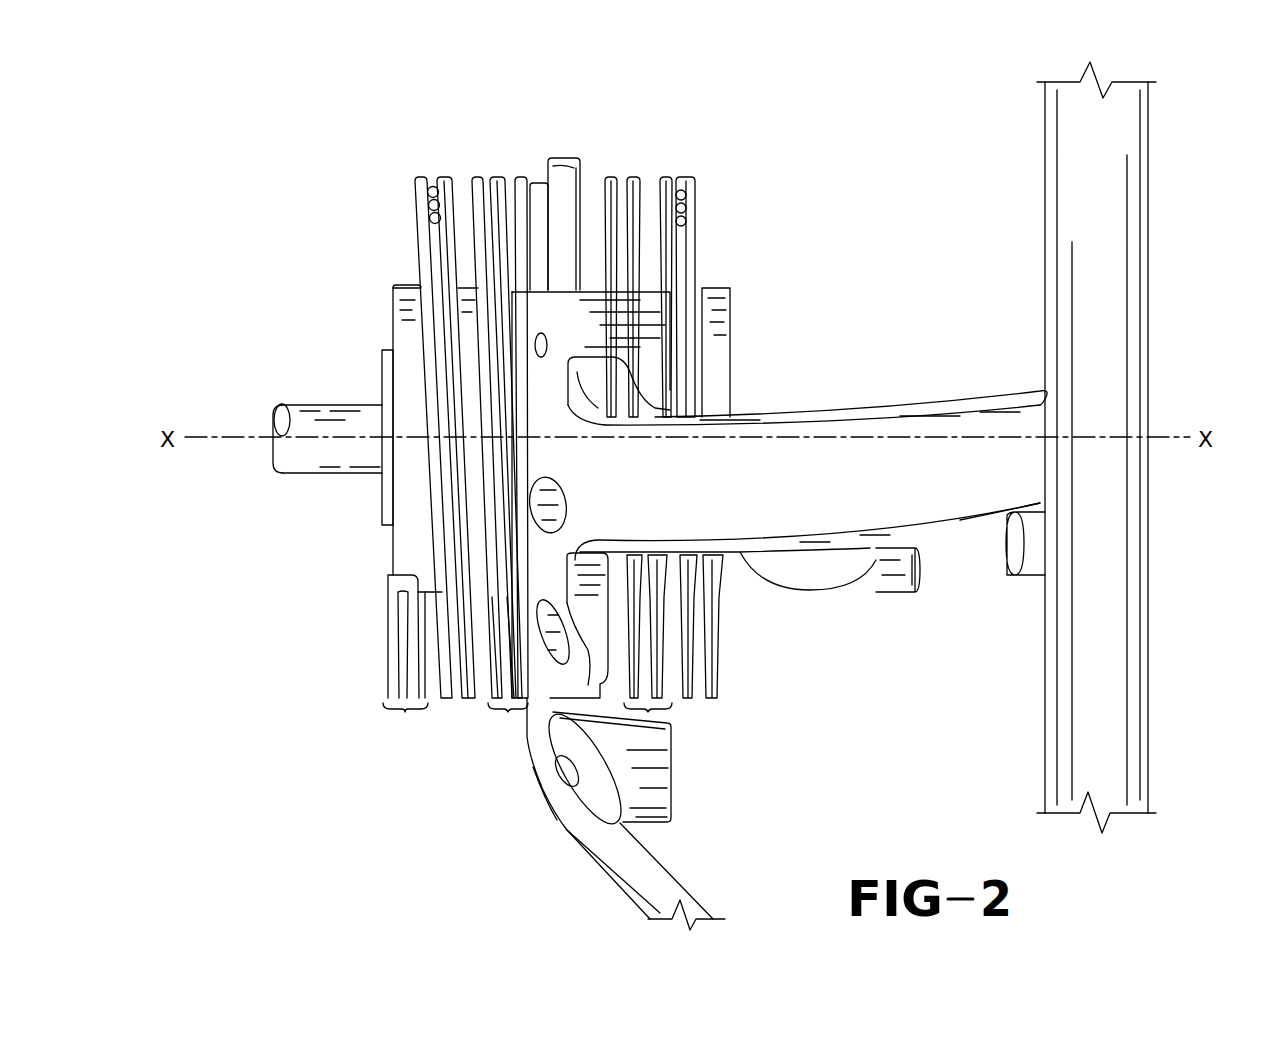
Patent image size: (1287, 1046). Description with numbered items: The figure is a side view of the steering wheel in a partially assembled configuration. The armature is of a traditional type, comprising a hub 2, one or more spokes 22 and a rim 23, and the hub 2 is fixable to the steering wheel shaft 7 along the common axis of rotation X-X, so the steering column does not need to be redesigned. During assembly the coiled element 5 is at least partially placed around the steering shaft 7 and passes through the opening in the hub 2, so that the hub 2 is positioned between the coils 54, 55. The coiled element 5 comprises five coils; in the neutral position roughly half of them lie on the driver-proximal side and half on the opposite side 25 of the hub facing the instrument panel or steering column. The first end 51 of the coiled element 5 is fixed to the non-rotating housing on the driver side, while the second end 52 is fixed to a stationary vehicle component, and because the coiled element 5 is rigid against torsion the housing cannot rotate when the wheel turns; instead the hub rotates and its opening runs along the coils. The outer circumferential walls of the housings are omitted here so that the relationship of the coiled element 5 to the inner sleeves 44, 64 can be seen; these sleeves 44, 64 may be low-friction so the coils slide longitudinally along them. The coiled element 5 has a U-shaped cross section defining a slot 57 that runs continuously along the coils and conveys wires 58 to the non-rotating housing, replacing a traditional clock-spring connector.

The hub 2 is at (565, 200).
The coiled element 5 is at (404, 203).
The steering wheel shaft 7 is at (340, 478).
The spoke 22 is at (968, 425).
The rim 23 is at (1095, 218).
The opposite side of the hub 25 is at (525, 728).
The inner sleeve 44 is at (718, 350).
The first end of the coiled element 51 is at (717, 643).
The second end of the coiled element 52 is at (393, 709).
The coil 54 is at (502, 710).
The coil 55 is at (648, 712).
The slot 57 is at (490, 170).
The wires 58 is at (682, 190).
The inner sleeve 64 is at (407, 325).